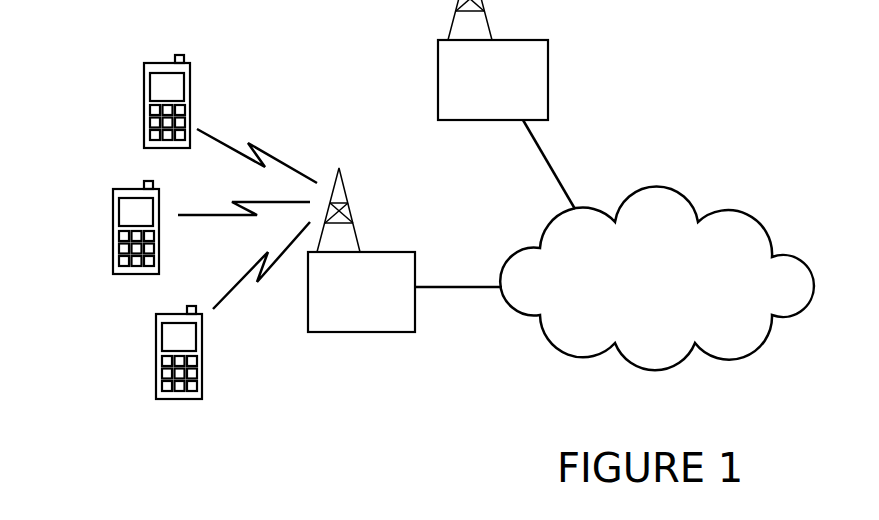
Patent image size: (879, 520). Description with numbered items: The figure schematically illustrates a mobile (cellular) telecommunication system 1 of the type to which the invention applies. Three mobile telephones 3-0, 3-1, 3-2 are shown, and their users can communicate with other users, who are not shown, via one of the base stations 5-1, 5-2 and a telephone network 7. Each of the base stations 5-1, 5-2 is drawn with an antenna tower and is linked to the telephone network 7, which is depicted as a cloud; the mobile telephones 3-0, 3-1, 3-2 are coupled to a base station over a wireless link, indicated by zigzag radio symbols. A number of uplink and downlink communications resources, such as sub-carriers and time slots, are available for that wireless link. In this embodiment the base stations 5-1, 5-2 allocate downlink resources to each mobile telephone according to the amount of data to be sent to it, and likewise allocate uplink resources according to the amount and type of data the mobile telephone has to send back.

The mobile telecommunication system 1 is at (427, 247).
The mobile telephone 3-0 is at (143, 146).
The mobile telephone 3-1 is at (113, 265).
The mobile telephone 3-2 is at (156, 386).
The base station 5-1 is at (390, 252).
The base station 5-2 is at (548, 49).
The telephone network 7 is at (685, 193).